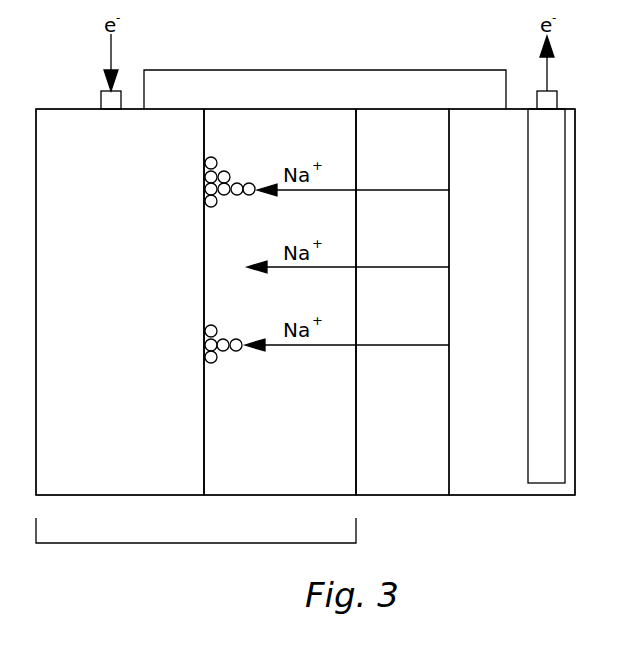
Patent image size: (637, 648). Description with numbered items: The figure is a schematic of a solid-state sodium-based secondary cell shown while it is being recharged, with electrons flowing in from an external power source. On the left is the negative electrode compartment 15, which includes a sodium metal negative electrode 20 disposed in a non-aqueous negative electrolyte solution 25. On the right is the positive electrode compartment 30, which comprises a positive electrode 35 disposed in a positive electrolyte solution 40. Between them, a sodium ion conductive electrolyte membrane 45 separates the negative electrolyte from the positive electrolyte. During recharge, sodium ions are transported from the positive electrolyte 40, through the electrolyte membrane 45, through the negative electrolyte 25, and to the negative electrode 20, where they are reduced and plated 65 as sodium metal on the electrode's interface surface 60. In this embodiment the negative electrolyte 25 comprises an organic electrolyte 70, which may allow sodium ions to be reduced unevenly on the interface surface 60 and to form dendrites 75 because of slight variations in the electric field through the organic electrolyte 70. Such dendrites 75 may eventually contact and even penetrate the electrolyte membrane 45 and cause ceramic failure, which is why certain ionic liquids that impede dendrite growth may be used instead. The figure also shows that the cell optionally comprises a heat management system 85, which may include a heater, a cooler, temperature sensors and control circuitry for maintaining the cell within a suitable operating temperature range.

The negative electrode compartment 15 is at (195, 543).
The sodium metal negative electrode 20 is at (128, 152).
The non-aqueous negative electrolyte solution 25 is at (252, 152).
The positive electrode compartment 30 is at (510, 504).
The positive electrode 35 is at (562, 320).
The positive electrolyte solution 40 is at (505, 152).
The sodium ion conductive electrolyte membrane 45 is at (412, 152).
The interface surface 60 is at (204, 410).
The plated sodium metal 65 is at (219, 202).
The organic electrolyte 70 is at (328, 152).
The dendrites 75 is at (229, 362).
The heat management system 85 is at (332, 105).